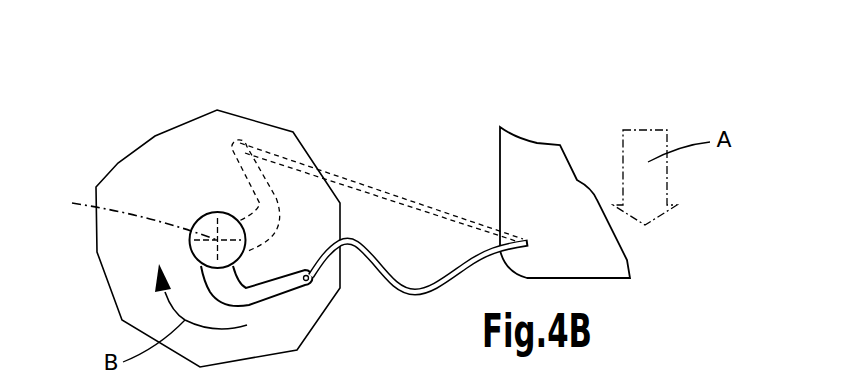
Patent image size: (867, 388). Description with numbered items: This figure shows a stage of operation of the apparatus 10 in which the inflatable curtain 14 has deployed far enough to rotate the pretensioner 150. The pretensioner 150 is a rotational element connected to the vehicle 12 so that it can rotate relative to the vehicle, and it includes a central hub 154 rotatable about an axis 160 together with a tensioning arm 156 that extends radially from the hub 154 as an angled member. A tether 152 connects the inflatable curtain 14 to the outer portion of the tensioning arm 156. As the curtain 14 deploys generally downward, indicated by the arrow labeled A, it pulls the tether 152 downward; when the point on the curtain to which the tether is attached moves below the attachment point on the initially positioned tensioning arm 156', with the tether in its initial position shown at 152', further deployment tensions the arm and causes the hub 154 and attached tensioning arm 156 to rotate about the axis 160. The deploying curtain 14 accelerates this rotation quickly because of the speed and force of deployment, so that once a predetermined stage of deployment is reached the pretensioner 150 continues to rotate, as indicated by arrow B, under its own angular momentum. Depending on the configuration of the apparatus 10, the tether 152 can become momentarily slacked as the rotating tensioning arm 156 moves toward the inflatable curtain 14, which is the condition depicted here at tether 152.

The apparatus 10 is at (123, 72).
The vehicle 12 is at (198, 148).
The inflatable curtain 14 is at (520, 170).
The pretensioner 150 is at (185, 192).
The tether 152 is at (419, 295).
The tether in initial position 152' is at (382, 179).
The hub 154 is at (205, 250).
The tensioning arm 156 is at (257, 326).
The tensioning arm in initial position 156' is at (289, 159).
The axis 160 is at (123, 216).